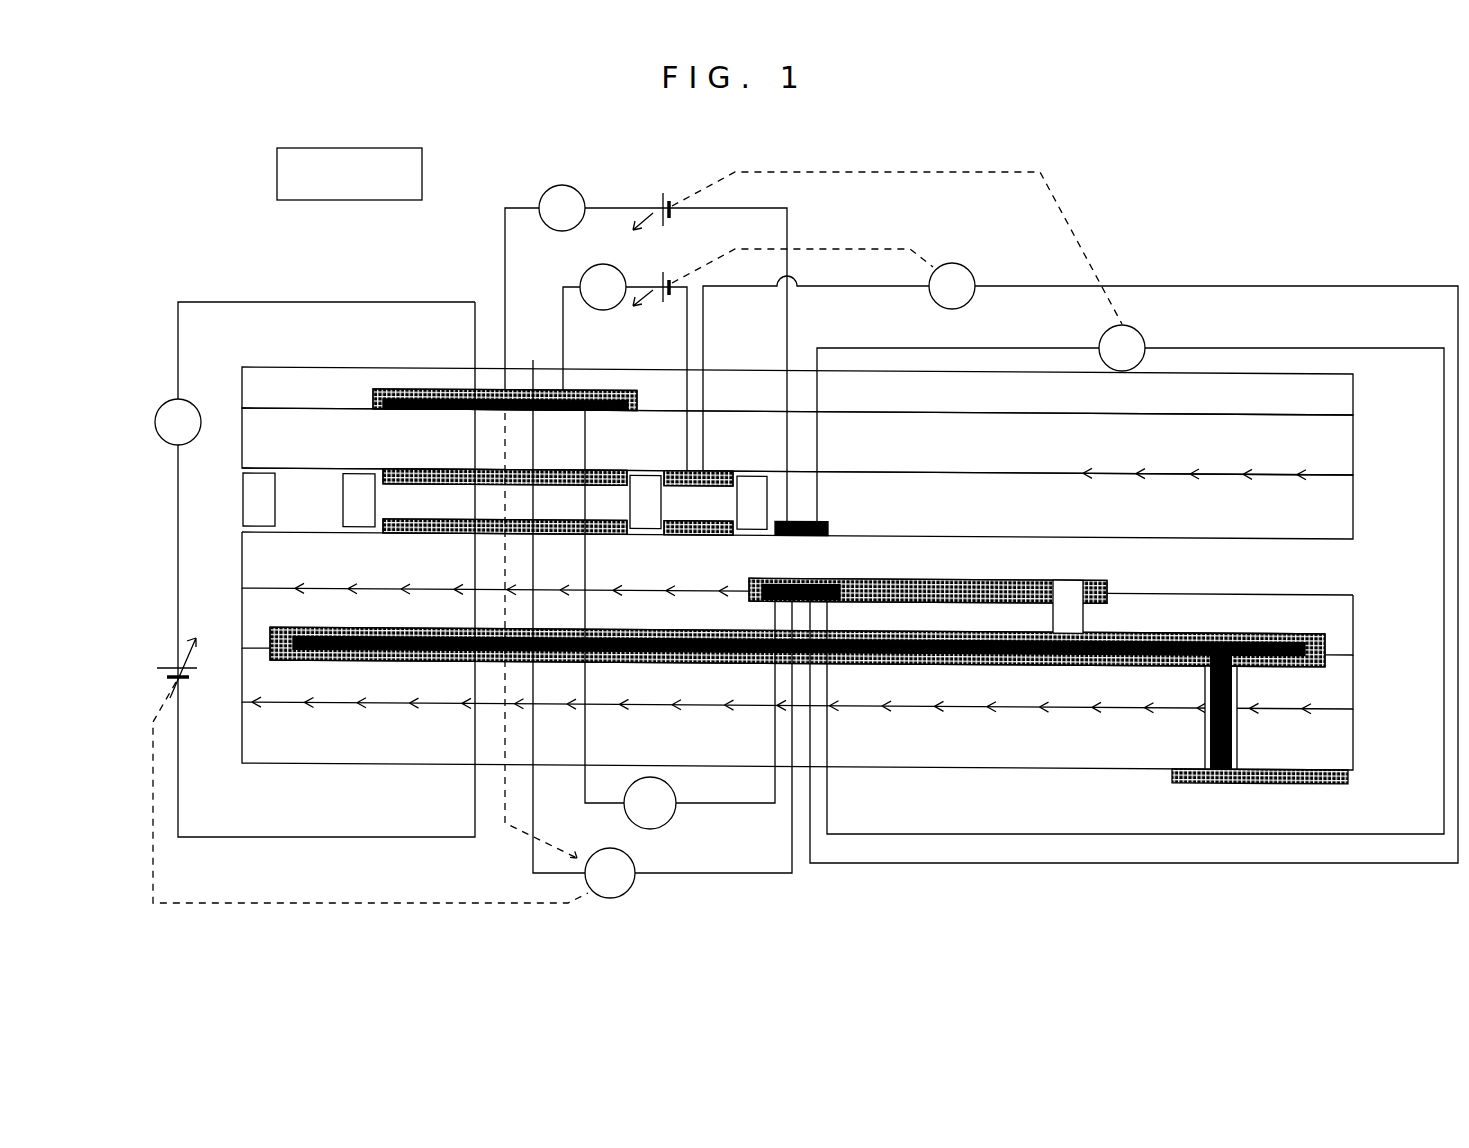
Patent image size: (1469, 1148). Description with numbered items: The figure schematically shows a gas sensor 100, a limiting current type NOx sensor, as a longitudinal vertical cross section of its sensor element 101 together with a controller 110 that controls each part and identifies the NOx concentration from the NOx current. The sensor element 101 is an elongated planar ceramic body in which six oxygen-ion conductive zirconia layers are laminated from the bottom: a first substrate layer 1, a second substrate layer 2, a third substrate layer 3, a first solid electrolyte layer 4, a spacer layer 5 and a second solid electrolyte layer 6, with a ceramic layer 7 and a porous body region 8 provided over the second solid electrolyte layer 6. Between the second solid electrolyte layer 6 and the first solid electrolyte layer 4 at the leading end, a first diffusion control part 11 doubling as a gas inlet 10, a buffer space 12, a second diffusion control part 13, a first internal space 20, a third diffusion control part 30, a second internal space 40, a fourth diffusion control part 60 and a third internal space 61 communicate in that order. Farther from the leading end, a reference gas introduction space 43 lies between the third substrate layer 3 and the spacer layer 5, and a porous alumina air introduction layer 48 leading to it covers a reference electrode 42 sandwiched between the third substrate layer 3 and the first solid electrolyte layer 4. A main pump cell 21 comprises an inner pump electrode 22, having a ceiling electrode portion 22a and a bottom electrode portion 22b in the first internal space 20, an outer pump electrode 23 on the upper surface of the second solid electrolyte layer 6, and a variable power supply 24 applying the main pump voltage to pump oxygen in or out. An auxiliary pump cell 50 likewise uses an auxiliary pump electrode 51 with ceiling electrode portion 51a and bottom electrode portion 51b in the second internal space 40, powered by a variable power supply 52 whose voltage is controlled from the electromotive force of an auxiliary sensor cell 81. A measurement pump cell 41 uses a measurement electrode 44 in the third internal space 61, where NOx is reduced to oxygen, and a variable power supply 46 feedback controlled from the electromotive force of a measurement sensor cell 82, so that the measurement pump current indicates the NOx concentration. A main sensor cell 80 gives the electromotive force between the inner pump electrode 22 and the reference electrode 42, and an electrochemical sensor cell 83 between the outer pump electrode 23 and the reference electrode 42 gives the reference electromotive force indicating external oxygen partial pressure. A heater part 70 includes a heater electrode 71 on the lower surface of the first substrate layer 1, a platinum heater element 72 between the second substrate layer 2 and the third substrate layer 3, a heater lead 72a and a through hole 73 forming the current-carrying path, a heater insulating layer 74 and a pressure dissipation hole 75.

The first substrate layer 1 is at (1348, 725).
The second substrate layer 2 is at (1350, 678).
The third substrate layer 3 is at (248, 607).
The first solid electrolyte layer 4 is at (245, 553).
The spacer layer 5 is at (1355, 481).
The second solid electrolyte layer 6 is at (1355, 441).
The ceramic layer 7 is at (1355, 391).
The porous body region 8 is at (437, 395).
The gas inlet 10 is at (242, 500).
The first diffusion control part 11 is at (262, 468).
The buffer space 12 is at (315, 496).
The second diffusion control part 13 is at (367, 484).
The first internal space 20 is at (552, 494).
The main pump cell 21 is at (300, 300).
The inner pump electrode 22 is at (473, 467).
The ceiling electrode portion 22a is at (588, 310).
The bottom electrode portion 22b is at (470, 519).
The outer pump electrode 23 is at (415, 389).
The variable power supply 24 is at (158, 668).
The third diffusion control part 30 is at (643, 472).
The second internal space 40 is at (680, 465).
The measurement pump cell 41 is at (505, 205).
The reference electrode 42 is at (840, 597).
The reference gas introduction space 43 is at (1356, 561).
The measurement electrode 44 is at (800, 532).
The variable power supply 46 is at (663, 192).
The air introduction layer 48 is at (960, 576).
The auxiliary pump cell 50 is at (577, 278).
The auxiliary pump electrode 51 is at (712, 467).
The ceiling electrode portion 51a is at (733, 467).
The bottom electrode portion 51b is at (680, 531).
The variable power supply 52 is at (660, 302).
The fourth diffusion control part 60 is at (750, 472).
The third internal space 61 is at (832, 466).
The heater part 70 is at (1332, 640).
The heater electrode 71 is at (1350, 771).
The heater element 72 is at (345, 650).
The heater lead 72a is at (945, 651).
The through hole 73 is at (1232, 734).
The heater insulating layer 74 is at (283, 661).
The pressure dissipation hole 75 is at (1075, 576).
The main sensor cell 80 is at (660, 885).
The auxiliary sensor cell 81 is at (1205, 282).
The measurement sensor cell 82 is at (1212, 344).
The electrochemical sensor cell 83 is at (688, 812).
The gas sensor 100 is at (133, 121).
The sensor element 101 is at (1300, 367).
The controller 110 is at (358, 148).